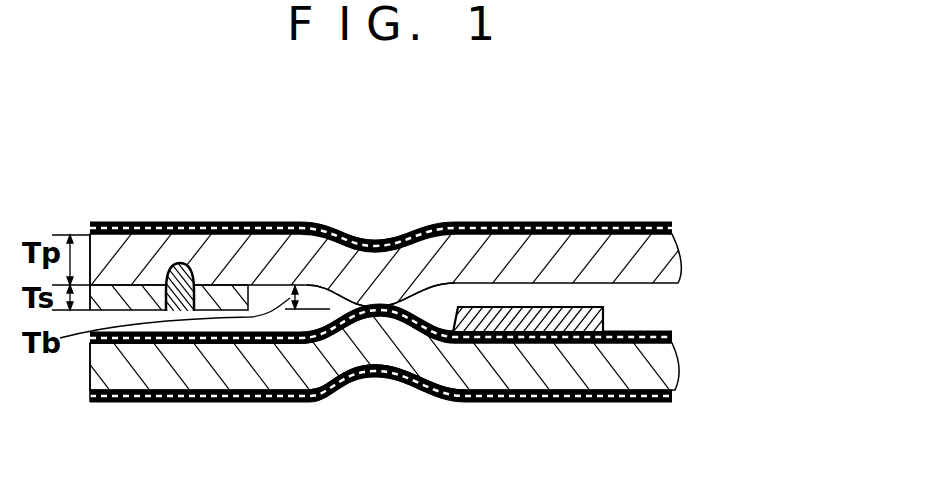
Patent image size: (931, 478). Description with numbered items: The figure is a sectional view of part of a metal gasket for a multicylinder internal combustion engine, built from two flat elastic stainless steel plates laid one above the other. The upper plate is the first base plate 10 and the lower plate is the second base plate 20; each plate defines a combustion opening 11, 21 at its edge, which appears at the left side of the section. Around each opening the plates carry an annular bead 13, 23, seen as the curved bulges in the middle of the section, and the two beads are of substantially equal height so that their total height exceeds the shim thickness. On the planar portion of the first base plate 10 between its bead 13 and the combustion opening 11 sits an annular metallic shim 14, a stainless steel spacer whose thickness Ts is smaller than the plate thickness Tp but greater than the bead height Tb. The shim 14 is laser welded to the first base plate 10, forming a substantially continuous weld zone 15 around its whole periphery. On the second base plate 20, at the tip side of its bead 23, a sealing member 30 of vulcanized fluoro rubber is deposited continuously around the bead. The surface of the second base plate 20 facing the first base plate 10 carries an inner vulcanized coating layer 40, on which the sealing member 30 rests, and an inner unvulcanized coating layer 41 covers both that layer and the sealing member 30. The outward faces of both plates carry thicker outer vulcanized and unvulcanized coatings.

The first base plate 10 is at (668, 265).
The combustion opening 11 is at (90, 265).
The annular bead 13 is at (376, 275).
The annular metallic shim 14 is at (122, 297).
The weld zone 15 is at (178, 262).
The second base plate 20 is at (603, 378).
The combustion opening 21 is at (88, 370).
The annular bead 23 is at (388, 346).
The sealing member 30 is at (605, 310).
The inner vulcanized coating layer 40 is at (672, 338).
The inner unvulcanized coating layer 41 is at (672, 333).